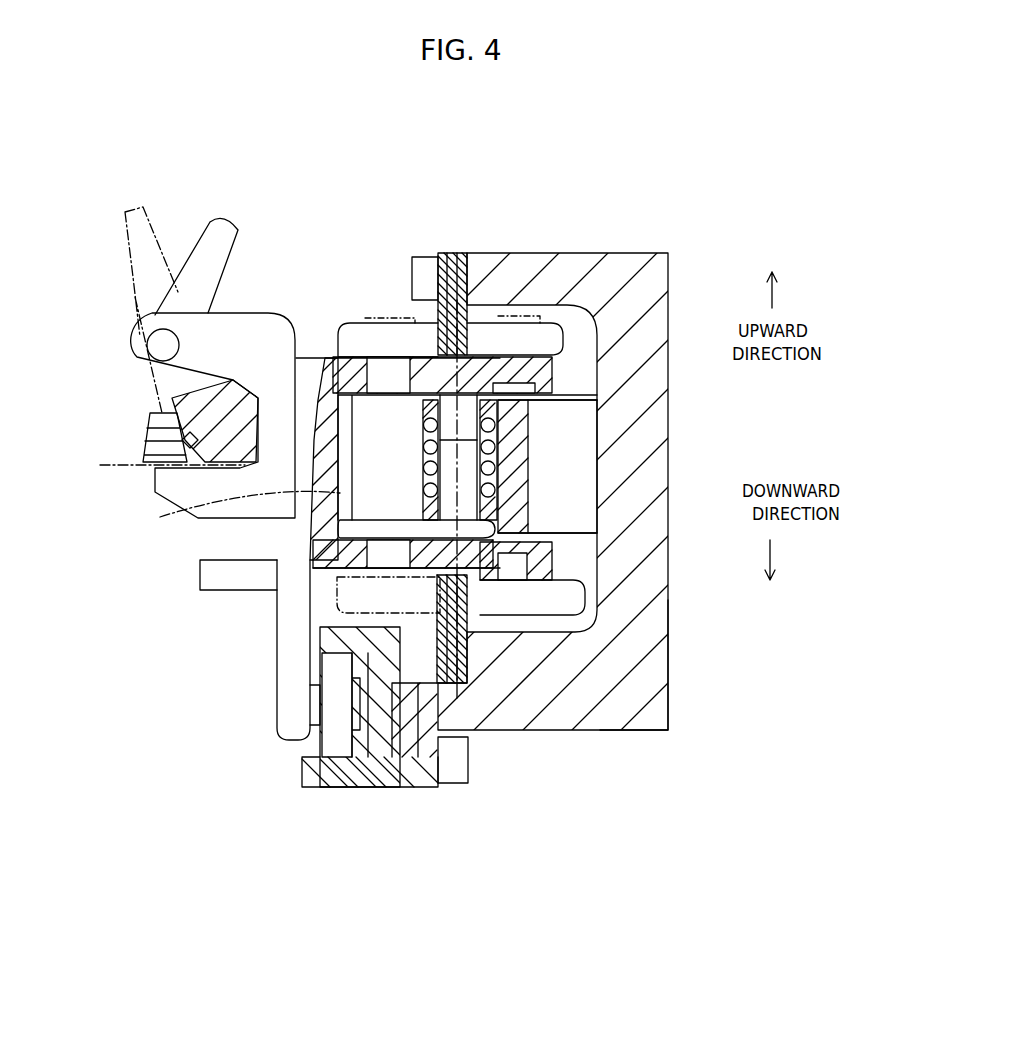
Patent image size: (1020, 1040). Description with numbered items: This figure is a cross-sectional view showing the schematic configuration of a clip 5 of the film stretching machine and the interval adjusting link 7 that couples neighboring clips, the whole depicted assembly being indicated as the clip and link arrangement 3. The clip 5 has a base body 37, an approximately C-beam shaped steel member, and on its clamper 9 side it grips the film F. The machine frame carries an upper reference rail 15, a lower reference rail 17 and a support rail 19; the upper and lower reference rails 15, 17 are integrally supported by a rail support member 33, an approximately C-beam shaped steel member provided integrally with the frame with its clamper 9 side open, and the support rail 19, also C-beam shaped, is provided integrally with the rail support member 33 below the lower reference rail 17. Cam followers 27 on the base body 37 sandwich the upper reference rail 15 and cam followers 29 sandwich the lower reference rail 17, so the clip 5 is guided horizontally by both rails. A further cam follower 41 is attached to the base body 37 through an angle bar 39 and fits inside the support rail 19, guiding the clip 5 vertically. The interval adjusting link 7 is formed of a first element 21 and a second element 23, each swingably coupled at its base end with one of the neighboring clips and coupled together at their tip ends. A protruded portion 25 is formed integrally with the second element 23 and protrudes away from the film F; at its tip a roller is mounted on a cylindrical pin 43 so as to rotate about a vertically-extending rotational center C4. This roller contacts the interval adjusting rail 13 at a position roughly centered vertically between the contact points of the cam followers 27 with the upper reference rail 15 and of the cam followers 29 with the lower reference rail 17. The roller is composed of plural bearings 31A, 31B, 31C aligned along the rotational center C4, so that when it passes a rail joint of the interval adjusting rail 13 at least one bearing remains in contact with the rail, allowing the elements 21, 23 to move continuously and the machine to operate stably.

The hinge device 3 is at (582, 145).
The clip 5 is at (318, 360).
The interval adjusting link 7 is at (590, 333).
The clamper 9 is at (253, 313).
The interval adjusting rail 13 is at (520, 455).
The upper reference rails 15 is at (421, 257).
The lower reference rails 17 is at (437, 657).
The support rails 19 is at (330, 790).
The first element 21 is at (498, 420).
The second element 23 is at (355, 403).
The protruded portion 25 is at (473, 405).
The cam followers 27 is at (415, 320).
The cam followers 29 is at (277, 658).
The bearing 31A is at (505, 437).
The bearing 31B is at (500, 480).
The bearing 31C is at (500, 505).
The rail support member 33 is at (668, 665).
The base body 37 is at (553, 556).
The angle bar 39 is at (200, 578).
The cam follower 41 is at (327, 743).
The cylindrical pin 43 is at (205, 505).
The rotational center C4 is at (447, 445).
The film F is at (100, 465).